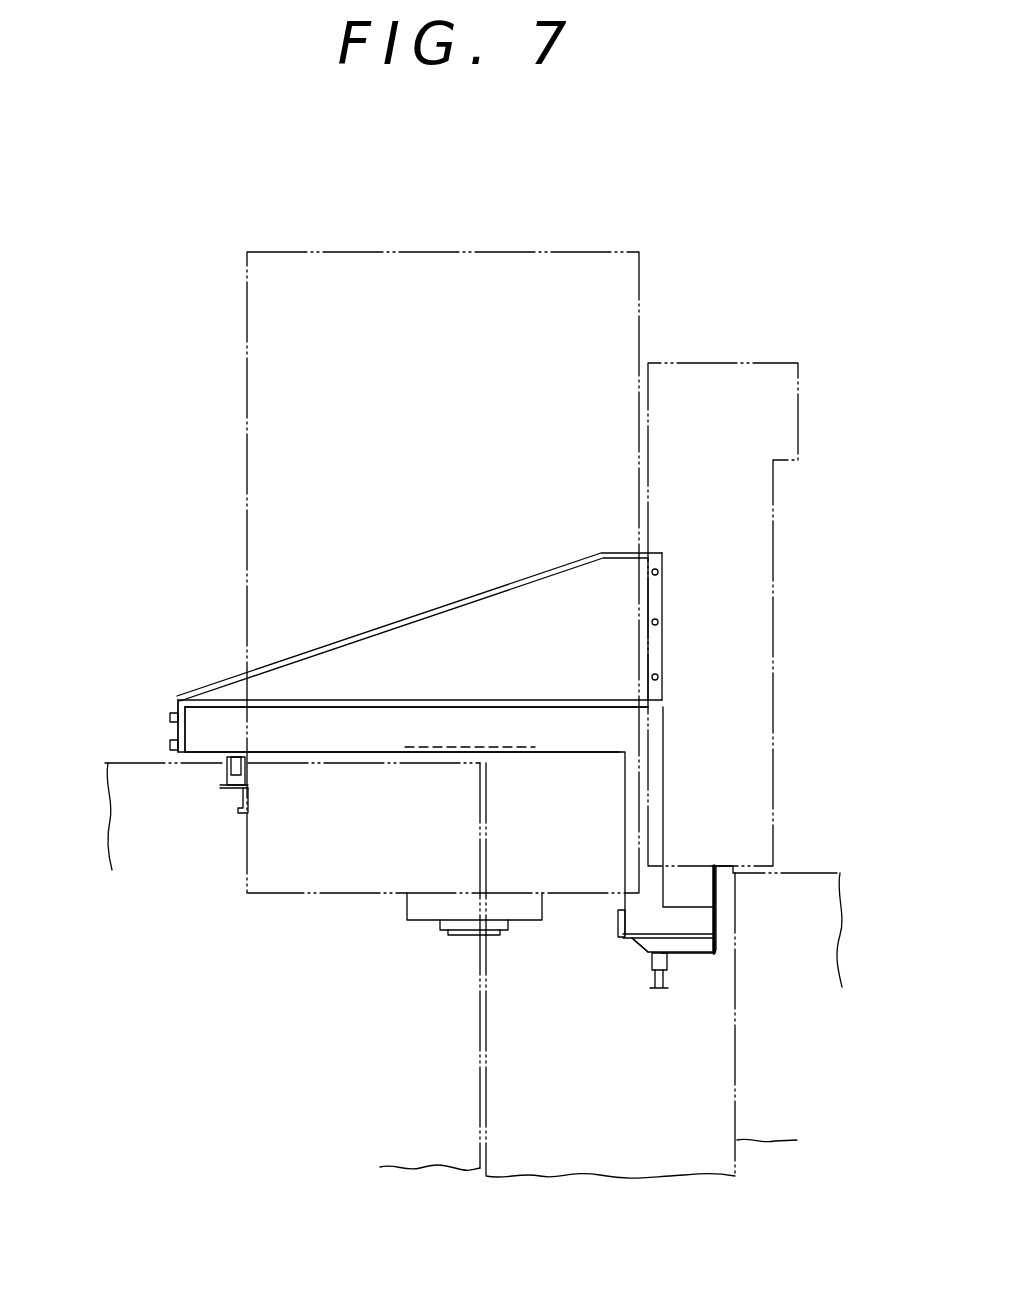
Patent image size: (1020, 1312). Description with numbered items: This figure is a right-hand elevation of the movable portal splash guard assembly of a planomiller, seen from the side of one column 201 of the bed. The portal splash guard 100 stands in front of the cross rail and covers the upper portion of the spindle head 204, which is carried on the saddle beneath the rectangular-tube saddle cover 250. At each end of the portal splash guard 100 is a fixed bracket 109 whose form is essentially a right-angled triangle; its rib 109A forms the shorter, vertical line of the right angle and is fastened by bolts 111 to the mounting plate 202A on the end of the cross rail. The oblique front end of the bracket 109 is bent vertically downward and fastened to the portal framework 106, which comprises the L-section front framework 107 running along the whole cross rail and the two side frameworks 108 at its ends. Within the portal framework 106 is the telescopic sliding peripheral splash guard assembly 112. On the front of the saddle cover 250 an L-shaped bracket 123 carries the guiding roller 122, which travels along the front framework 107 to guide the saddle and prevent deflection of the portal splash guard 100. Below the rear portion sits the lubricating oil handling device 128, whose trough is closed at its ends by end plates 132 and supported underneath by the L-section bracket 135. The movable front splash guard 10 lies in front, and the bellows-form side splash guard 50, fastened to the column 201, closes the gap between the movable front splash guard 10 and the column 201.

The saddle cover 250 is at (246, 343).
The mounting plate 202A is at (683, 363).
The portal splash guard 100 is at (421, 704).
The fixed bracket 109 is at (397, 622).
The rib 109A is at (683, 626).
The bolts 111 is at (658, 572).
The telescopic sliding peripheral splash guard assembly 112 is at (489, 748).
The portal framework 106 is at (163, 558).
The front framework 107 is at (200, 715).
The side frameworks 108 is at (300, 728).
The movable front splash guard 10 is at (129, 762).
The guiding roller 122 is at (226, 770).
The L-shaped bracket 123 is at (241, 808).
The spindle head 204 is at (420, 922).
The side splash guard 50 is at (573, 1148).
The column 201 is at (808, 880).
The end plate 132 is at (652, 942).
The lubricating oil handling device 128 is at (634, 954).
The bracket 135 is at (688, 962).